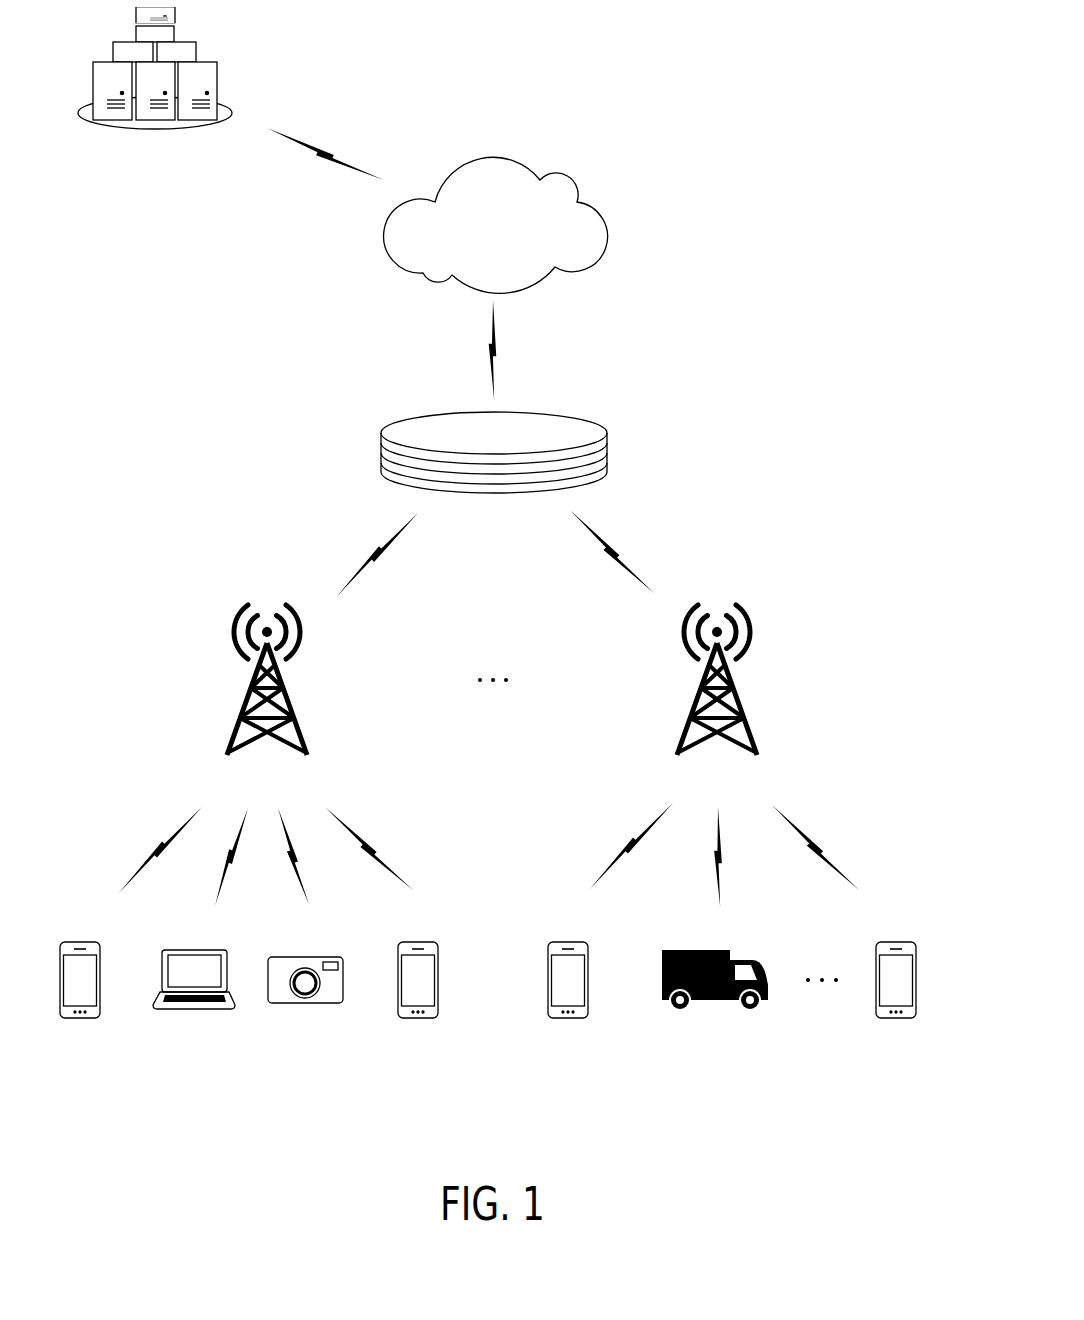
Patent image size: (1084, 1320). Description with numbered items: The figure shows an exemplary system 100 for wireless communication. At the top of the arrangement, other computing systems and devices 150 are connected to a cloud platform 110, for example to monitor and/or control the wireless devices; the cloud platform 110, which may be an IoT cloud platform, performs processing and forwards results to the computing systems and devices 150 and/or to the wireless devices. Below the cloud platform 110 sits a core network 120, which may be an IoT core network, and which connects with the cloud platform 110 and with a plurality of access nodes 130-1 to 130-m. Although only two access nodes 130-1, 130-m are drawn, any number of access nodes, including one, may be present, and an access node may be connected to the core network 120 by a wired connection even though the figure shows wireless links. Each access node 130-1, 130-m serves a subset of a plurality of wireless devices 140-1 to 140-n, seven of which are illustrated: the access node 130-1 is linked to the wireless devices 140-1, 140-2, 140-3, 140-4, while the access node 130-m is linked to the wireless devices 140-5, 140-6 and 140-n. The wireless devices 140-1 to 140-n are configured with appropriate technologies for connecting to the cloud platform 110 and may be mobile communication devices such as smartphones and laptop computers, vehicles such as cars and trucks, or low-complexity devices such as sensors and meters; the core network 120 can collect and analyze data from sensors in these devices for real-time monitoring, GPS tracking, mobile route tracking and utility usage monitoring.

The system 100 is at (757, 80).
The cloud platform 110 is at (607, 227).
The core network 120 is at (607, 436).
The access node 130-1 is at (295, 700).
The access node 130-m is at (743, 700).
The wireless device 140-1 is at (78, 1018).
The wireless device 140-2 is at (198, 1011).
The wireless device 140-3 is at (307, 1003).
The wireless device 140-4 is at (418, 1018).
The wireless device 140-5 is at (568, 1018).
The wireless device 140-6 is at (690, 1003).
The wireless device 140-n is at (897, 1018).
The computing systems and devices 150 is at (195, 53).